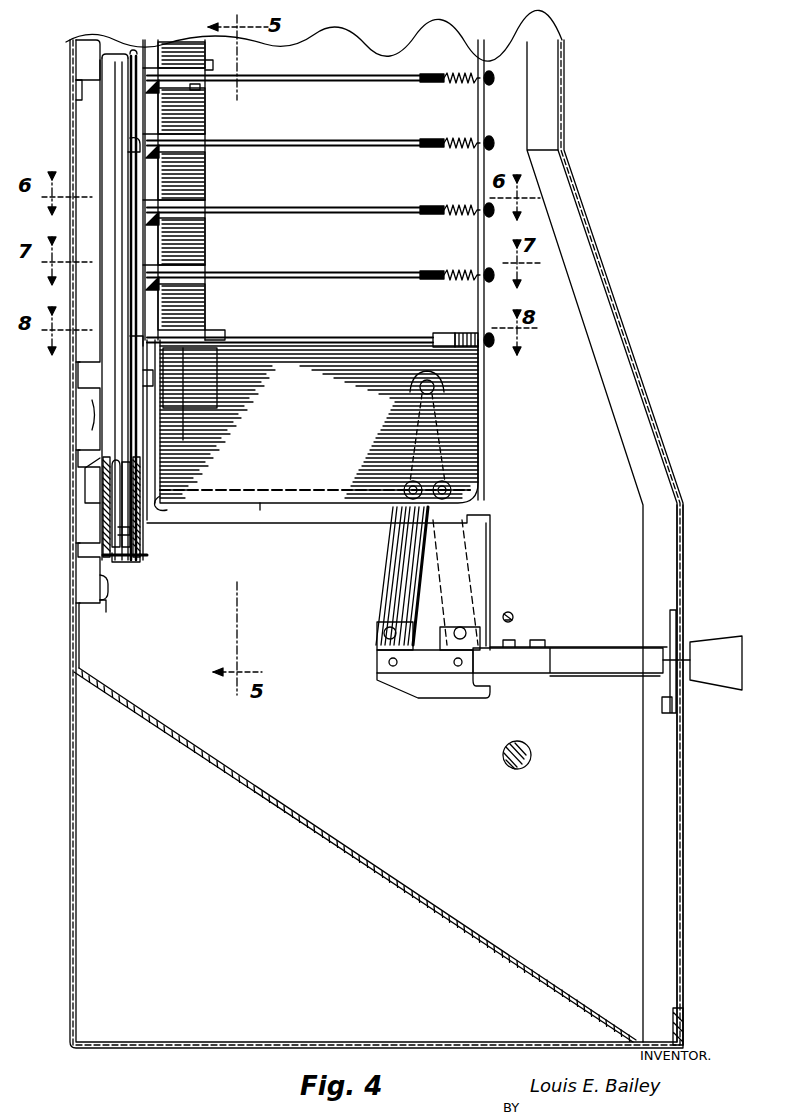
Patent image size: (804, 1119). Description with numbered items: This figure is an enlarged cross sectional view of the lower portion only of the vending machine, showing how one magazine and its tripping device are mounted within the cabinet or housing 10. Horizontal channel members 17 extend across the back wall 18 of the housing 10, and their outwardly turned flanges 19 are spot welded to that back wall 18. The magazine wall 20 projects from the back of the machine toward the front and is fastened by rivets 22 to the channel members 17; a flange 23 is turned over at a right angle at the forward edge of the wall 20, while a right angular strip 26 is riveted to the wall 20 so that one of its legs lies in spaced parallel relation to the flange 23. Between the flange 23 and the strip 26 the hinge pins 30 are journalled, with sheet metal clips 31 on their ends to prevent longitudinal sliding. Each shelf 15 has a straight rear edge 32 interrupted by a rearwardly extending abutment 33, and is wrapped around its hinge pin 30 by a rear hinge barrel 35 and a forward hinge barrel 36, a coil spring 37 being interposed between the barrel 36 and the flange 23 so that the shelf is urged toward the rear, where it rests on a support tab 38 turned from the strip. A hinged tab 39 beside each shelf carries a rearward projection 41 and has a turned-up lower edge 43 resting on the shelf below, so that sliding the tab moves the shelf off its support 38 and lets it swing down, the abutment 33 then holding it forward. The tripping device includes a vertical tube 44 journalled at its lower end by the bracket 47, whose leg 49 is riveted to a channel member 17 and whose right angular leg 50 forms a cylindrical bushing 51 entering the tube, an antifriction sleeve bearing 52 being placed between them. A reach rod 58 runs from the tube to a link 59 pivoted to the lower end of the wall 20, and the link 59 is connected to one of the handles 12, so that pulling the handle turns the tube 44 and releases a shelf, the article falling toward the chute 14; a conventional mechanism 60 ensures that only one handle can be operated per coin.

The cabinet or housing 10 is at (613, 93).
The handles or knobs 12 is at (738, 642).
The chute 14 is at (688, 896).
The shelves 15 is at (388, 74).
The channel members 17 is at (92, 82).
The back wall 18 is at (70, 42).
The outwardly turned flanges 19 is at (72, 94).
The wall 20 is at (340, 44).
The rivets 22 is at (92, 44).
The flange 23 is at (486, 46).
The right angular strip 26 is at (199, 438).
The hinge pins 30 is at (390, 84).
The sheet metal clips 31 is at (493, 86).
The rear edge of shelf 32 is at (166, 502).
The abutment 33 is at (145, 381).
The hinge barrel 35 is at (198, 90).
The hinge barrel 36 is at (432, 84).
The coil spring 37 is at (458, 82).
The tab 38 is at (135, 150).
The hinged tab 39 is at (190, 45).
The projection 41 is at (134, 100).
The lower edge 43 is at (208, 64).
The vertical tube 44 is at (118, 58).
The bracket 47 is at (108, 592).
The leg 49 is at (106, 602).
The right angular leg 50 is at (137, 557).
The cylindrical bushing 51 is at (126, 562).
The antifriction sleeve bearing 52 is at (140, 530).
The reach rod 58 is at (268, 512).
The link 59 is at (470, 553).
The conventional mechanism 60 is at (533, 631).